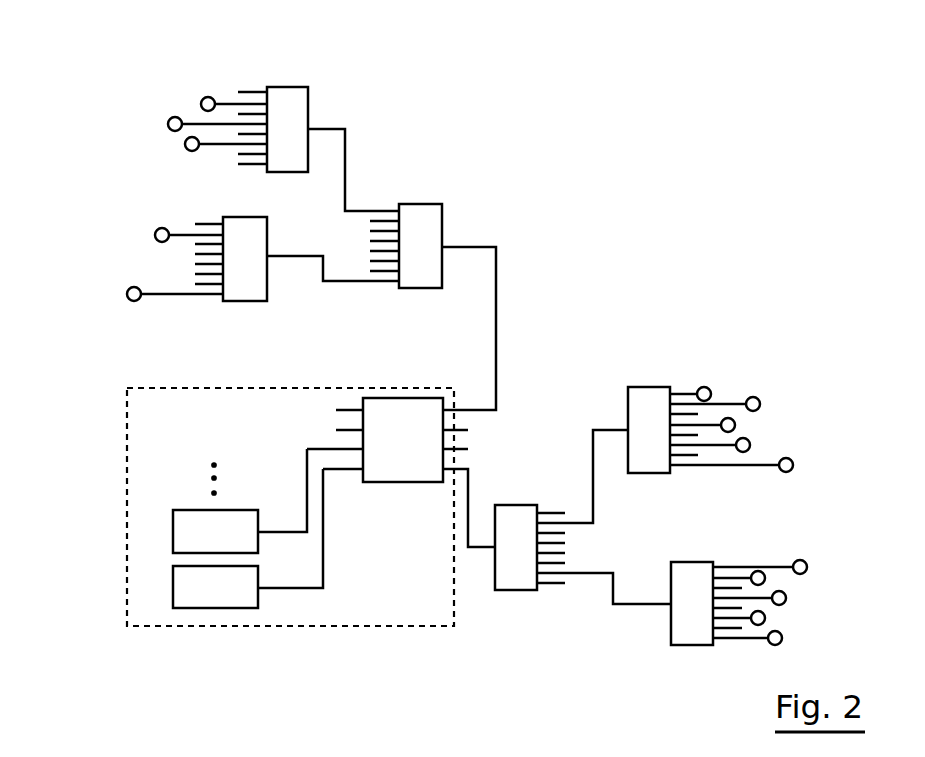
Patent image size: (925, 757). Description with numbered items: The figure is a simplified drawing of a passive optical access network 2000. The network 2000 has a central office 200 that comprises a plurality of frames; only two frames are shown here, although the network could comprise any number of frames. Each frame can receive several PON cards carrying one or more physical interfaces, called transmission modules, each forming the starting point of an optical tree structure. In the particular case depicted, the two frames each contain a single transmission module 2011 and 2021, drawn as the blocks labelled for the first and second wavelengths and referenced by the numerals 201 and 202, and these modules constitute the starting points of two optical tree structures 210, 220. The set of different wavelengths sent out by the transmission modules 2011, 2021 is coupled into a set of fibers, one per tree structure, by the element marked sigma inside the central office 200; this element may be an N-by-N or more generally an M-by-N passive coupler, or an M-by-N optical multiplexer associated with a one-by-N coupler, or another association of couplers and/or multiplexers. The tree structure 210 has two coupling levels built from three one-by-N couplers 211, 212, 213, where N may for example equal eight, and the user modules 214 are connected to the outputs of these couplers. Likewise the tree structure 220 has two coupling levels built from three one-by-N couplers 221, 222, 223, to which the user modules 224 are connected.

The passive optical access network 2000 is at (589, 170).
The central office 200 is at (127, 423).
The first laser source 201 is at (193, 608).
The transmission module 2011 is at (252, 608).
The second laser source 202 is at (245, 510).
The transmission module 2021 is at (183, 510).
The optical tree structure 210 is at (496, 338).
The 1×N coupler 211 is at (418, 204).
The 1×N coupler 212 is at (288, 87).
The 1×N coupler 213 is at (243, 303).
The user modules 214 is at (178, 132).
The optical tree structure 220 is at (468, 552).
The 1×N coupler 221 is at (515, 593).
The 1×N coupler 222 is at (642, 387).
The 1×N coupler 223 is at (690, 647).
The user modules 224 is at (743, 435).